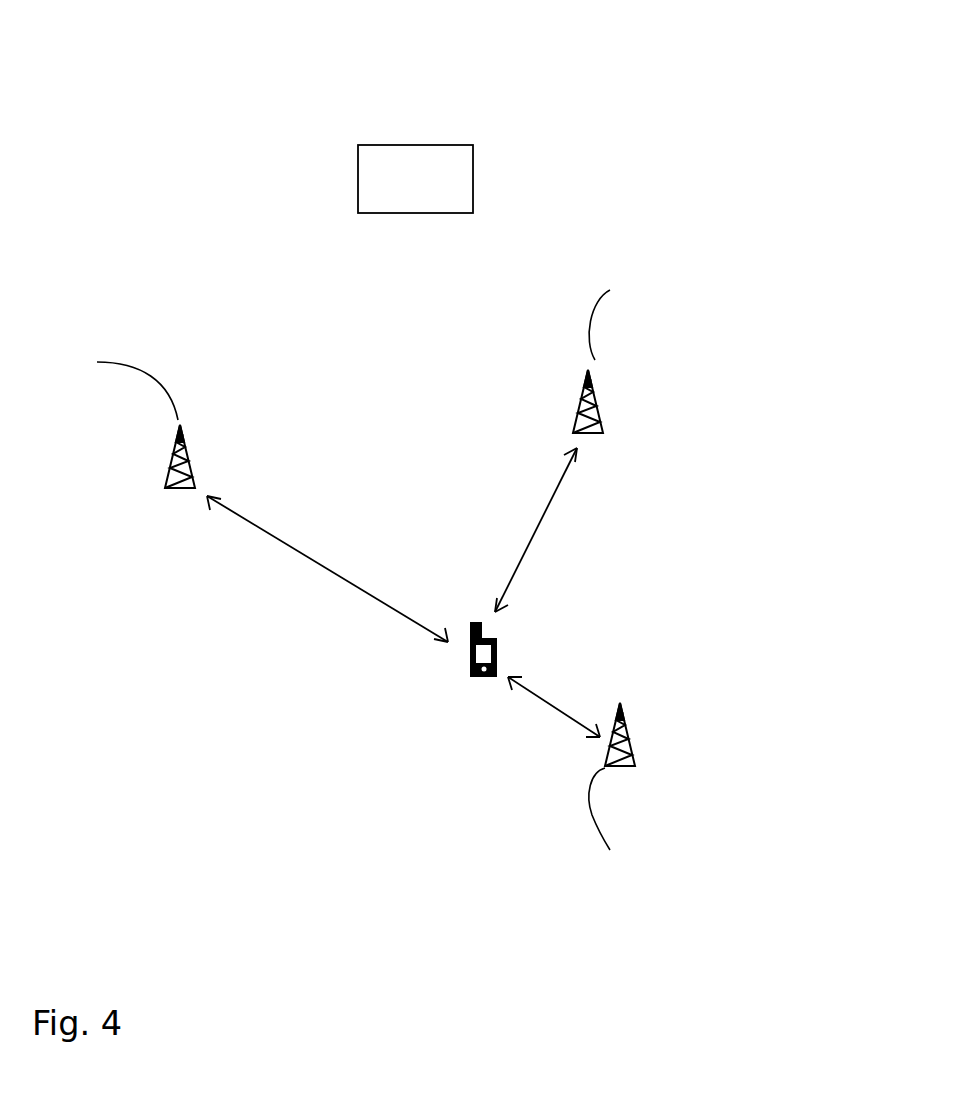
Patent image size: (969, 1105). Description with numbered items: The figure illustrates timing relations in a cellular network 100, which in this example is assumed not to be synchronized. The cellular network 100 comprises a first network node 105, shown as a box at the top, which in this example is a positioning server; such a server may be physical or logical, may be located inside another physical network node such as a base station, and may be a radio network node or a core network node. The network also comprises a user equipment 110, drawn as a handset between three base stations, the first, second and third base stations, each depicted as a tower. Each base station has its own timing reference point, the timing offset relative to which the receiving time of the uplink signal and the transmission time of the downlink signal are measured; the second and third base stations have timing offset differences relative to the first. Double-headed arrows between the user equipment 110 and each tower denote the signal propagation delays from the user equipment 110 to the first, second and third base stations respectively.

The cellular network 100 is at (248, 108).
The first network node 105 is at (400, 155).
The user equipment 110 is at (468, 663).